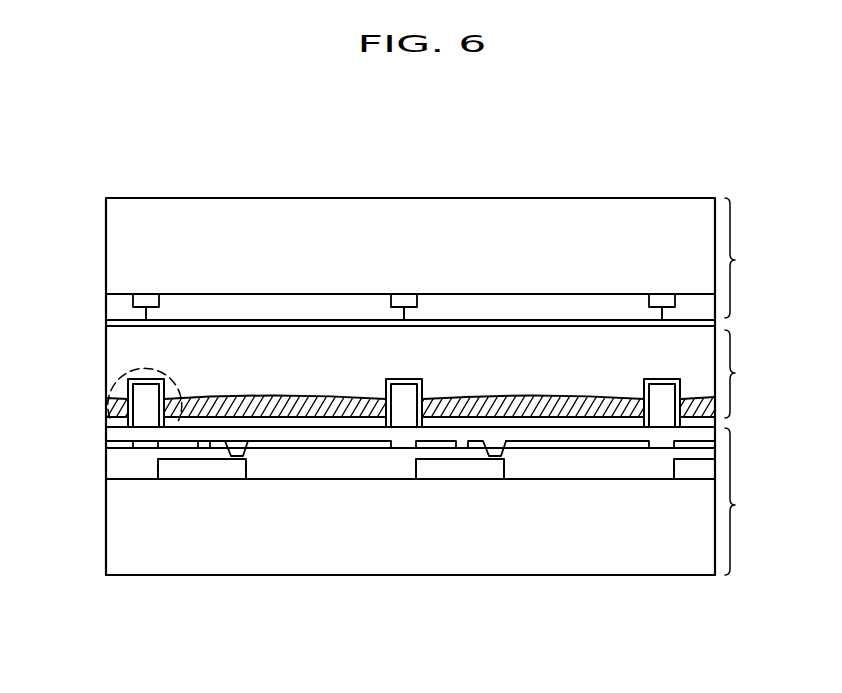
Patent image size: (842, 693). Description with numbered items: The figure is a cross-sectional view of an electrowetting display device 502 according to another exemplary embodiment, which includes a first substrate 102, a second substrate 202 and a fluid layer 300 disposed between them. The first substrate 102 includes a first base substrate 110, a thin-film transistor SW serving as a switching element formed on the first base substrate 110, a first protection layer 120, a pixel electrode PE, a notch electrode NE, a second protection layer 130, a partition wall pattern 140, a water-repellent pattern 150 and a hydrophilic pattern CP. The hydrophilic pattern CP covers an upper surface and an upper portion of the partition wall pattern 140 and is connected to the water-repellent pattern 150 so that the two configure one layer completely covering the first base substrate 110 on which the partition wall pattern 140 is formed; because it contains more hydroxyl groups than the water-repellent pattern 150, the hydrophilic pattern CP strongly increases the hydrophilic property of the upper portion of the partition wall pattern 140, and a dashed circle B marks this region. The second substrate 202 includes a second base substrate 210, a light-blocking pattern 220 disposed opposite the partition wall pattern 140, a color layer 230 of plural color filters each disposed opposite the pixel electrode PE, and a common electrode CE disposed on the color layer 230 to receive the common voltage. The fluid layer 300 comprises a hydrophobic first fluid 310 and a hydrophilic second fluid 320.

The electrowetting display device 502 is at (721, 168).
The second base substrate 210 is at (112, 222).
The light-blocking pattern 220 is at (143, 297).
The color layer 230 is at (112, 306).
The common electrode CE is at (112, 320).
The second fluid 320 is at (112, 370).
The partition wall pattern 140 is at (127, 407).
The first fluid 310 is at (336, 418).
The second protection layer 130 is at (112, 437).
The notch electrode NE is at (172, 443).
The pixel electrode PE is at (272, 444).
The hydrophilic pattern CP is at (403, 386).
The water-repellent pattern 150 is at (350, 428).
The first protection layer 120 is at (112, 467).
The thin-film transistor SW is at (214, 460).
The first base substrate 110 is at (112, 521).
The enlarged portion B is at (182, 380).
The second substrate 202 is at (749, 258).
The fluid layer 300 is at (749, 374).
The first substrate 102 is at (749, 501).